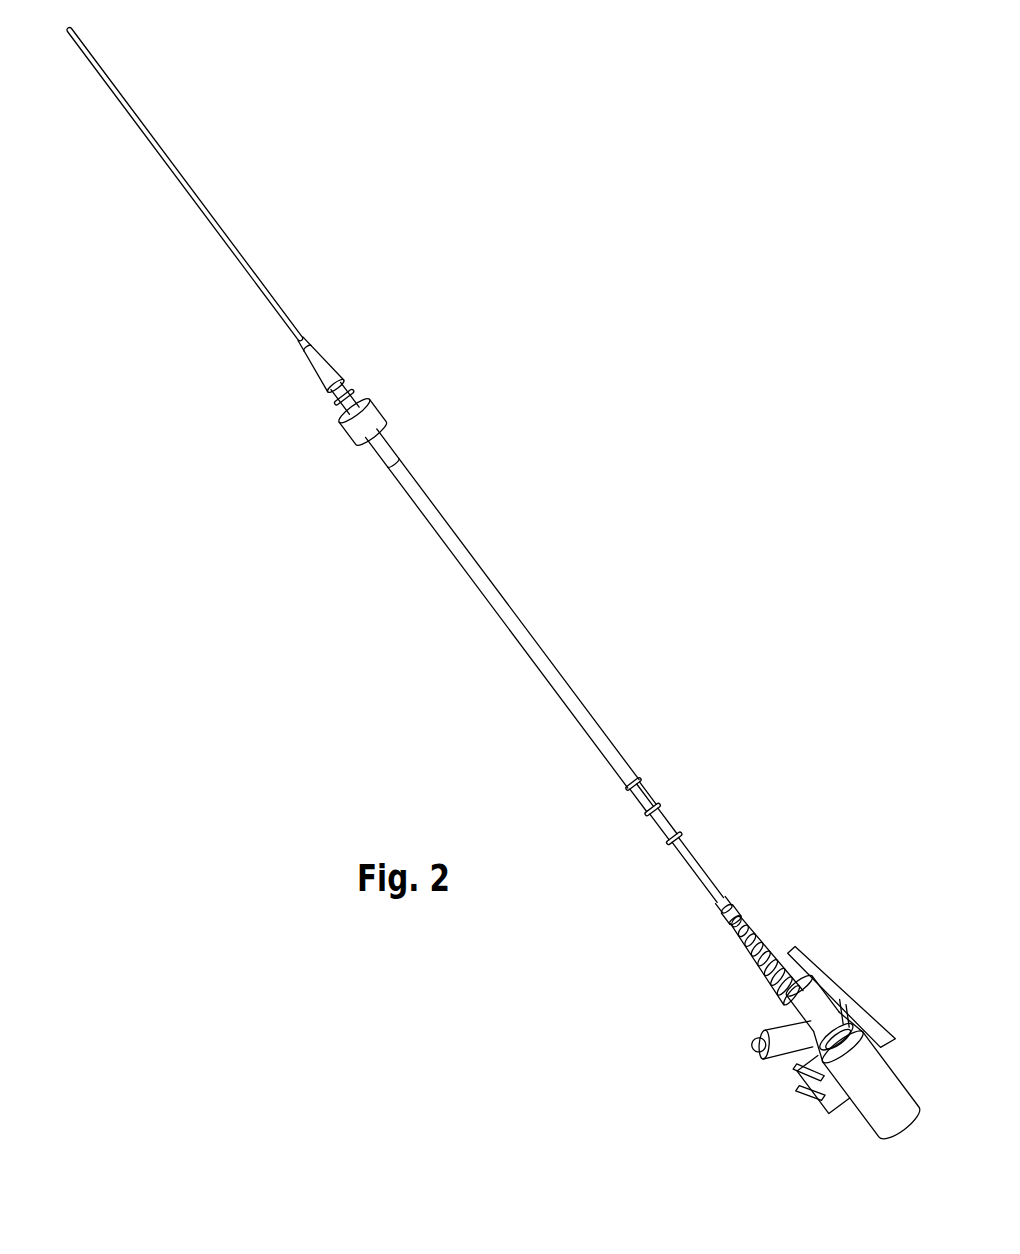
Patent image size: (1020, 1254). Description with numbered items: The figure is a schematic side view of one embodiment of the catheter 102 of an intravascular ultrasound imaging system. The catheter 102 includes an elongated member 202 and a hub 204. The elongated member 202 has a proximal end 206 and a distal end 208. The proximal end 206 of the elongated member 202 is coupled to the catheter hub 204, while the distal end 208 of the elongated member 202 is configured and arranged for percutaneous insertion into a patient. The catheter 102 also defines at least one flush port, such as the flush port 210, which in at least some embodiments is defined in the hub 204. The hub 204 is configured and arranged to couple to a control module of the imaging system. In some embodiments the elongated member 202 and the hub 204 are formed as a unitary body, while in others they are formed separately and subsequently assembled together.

The catheter 102 is at (545, 307).
The elongated member 202 is at (228, 537).
The hub 204 is at (887, 908).
The proximal end 206 is at (650, 943).
The distal end 208 is at (60, 83).
The flush port 210 is at (768, 1063).